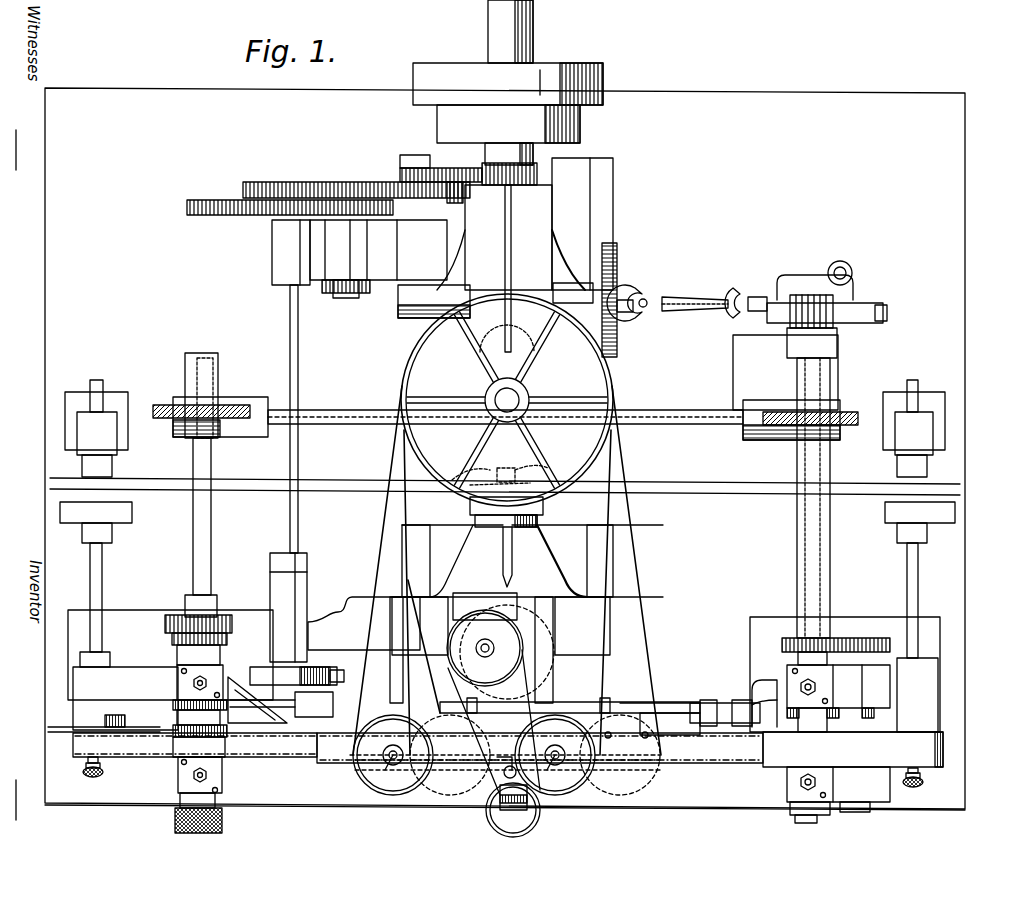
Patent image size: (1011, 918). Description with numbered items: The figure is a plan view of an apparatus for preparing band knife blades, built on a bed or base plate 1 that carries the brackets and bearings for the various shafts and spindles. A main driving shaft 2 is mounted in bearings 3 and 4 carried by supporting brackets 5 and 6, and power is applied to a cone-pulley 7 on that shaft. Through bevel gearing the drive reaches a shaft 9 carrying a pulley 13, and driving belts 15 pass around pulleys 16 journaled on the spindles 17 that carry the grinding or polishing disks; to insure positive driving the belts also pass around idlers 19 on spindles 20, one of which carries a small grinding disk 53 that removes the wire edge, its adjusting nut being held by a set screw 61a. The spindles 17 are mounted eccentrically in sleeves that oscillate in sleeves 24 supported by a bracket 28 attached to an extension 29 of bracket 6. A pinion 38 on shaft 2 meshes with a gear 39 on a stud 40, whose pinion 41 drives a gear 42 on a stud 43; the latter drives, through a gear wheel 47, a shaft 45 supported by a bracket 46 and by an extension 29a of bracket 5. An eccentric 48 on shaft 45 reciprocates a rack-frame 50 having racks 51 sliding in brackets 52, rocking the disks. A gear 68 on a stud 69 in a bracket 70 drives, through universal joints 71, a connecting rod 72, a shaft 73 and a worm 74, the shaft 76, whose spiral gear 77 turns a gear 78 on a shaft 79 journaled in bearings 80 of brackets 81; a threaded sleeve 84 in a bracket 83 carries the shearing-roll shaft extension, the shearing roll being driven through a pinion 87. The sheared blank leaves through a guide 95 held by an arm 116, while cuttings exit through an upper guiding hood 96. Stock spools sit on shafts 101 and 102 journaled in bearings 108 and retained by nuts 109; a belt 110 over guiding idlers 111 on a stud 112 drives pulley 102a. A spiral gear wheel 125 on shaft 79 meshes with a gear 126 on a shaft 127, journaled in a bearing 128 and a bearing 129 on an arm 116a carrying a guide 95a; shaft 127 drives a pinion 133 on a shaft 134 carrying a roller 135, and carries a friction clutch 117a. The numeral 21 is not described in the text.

The bed or base plate 1 is at (702, 595).
The main driving shaft 2 is at (488, 38).
The bearing 3 is at (494, 268).
The bearing 4 is at (513, 557).
The supporting bracket 5 is at (582, 224).
The supporting bracket 6 is at (532, 547).
The cone-pulley 7 is at (508, 114).
The shaft 9 is at (507, 400).
The pulley 13 is at (404, 372).
The driving belts 15 is at (385, 539).
The pulleys 16 is at (505, 755).
The spindles or shafts 17 is at (474, 755).
The idlers 19 is at (493, 694).
The shafts or spindles 20 is at (494, 648).
The pulley shaft 21 is at (474, 753).
The sleeves 24 is at (378, 224).
The bracket 28 is at (568, 627).
The extension 29 is at (462, 652).
The extension 29a is at (345, 607).
The pinion 38 is at (540, 170).
The gear 39 is at (400, 168).
The stud 40 is at (455, 162).
The pinion 41 is at (463, 195).
The gear 42 is at (285, 182).
The stud 43 is at (345, 182).
The shaft 45 is at (298, 330).
The bracket 46 is at (302, 252).
The gear wheel 47 is at (200, 215).
The eccentric 48 is at (257, 667).
The rack-frame 50 is at (467, 707).
The racks 51 is at (612, 702).
The brackets 52 is at (695, 667).
The small grinding disk 53 is at (500, 795).
The set screw 61a is at (535, 822).
The gear 68 is at (617, 262).
The stud 69 is at (640, 310).
The bracket 70 is at (573, 293).
The universal joints 71 is at (687, 296).
The connecting rod 72 is at (695, 314).
The shaft 73 is at (887, 313).
The worm 74 is at (805, 295).
The shaft 76 is at (840, 475).
The spiral gear 77 is at (850, 413).
The gear 78 is at (830, 455).
The shaft 79 is at (658, 424).
The bearings 80 is at (768, 440).
The brackets 81 is at (505, 386).
The bracket 83 is at (838, 740).
The threaded sleeve 84 is at (812, 823).
The pinion 87 is at (825, 636).
The guide 95 is at (540, 748).
The guide 95a is at (182, 742).
The upper guiding hood 96 is at (853, 749).
The shaft 101 is at (918, 565).
The shaft 102 is at (102, 575).
The pulley 102a is at (120, 478).
The bearings 108 is at (507, 556).
The nuts 109 is at (923, 788).
The belt 110 is at (338, 478).
The guiding idlers 111 is at (480, 478).
The stud 112 is at (535, 466).
The arm 116 is at (769, 703).
The arm or bracket 116a is at (257, 700).
The friction clutch 117a is at (178, 615).
The spiral gear wheel 125 is at (185, 388).
The gear 126 is at (165, 420).
The shaft 127 is at (211, 542).
The bearing 128 is at (215, 362).
The bearing 129 is at (177, 654).
The pinion 133 is at (172, 638).
The shaft 134 is at (211, 592).
The roller 135 is at (200, 749).